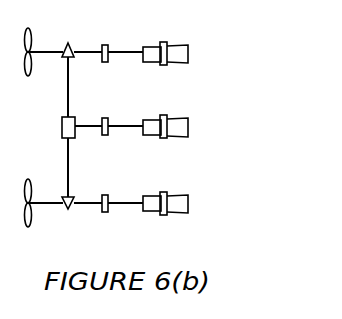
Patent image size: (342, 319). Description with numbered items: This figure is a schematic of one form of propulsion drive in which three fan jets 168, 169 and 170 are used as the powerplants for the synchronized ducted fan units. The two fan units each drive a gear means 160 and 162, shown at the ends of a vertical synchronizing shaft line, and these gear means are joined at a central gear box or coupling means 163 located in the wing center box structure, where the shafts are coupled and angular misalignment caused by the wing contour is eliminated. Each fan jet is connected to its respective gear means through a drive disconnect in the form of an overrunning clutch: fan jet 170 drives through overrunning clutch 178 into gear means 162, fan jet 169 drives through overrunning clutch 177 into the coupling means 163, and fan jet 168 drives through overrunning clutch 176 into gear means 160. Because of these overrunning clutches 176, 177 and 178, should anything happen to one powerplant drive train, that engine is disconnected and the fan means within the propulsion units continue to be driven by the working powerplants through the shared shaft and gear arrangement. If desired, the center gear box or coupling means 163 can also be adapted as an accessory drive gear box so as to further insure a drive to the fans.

The gear means 160 is at (69, 210).
The gear means 162 is at (73, 42).
The gear box or coupling means 163 is at (62, 132).
The fan jet engine 168 is at (189, 201).
The fan jet engine 169 is at (189, 124).
The fan jet engine 170 is at (189, 51).
The overrunning clutch 176 is at (108, 194).
The overrunning clutch 177 is at (108, 117).
The overrunning clutch 178 is at (110, 43).